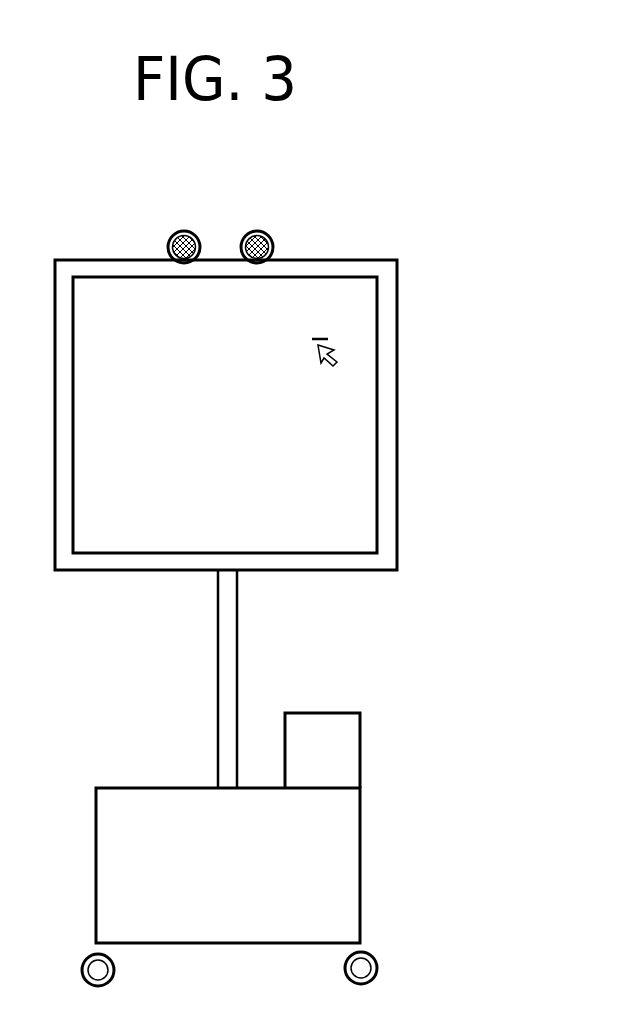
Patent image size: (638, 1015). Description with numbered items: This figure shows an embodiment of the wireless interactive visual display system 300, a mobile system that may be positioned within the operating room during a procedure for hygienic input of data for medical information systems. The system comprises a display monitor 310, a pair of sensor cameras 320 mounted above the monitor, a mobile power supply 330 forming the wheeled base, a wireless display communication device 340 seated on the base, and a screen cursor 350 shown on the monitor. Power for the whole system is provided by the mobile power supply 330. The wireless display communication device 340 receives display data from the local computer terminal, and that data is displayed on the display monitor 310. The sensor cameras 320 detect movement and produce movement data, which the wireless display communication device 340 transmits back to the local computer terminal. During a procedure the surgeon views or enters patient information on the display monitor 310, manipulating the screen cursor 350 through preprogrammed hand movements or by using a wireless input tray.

The wireless interactive visual display system 300 is at (408, 230).
The display monitor 310 is at (397, 366).
The sensor cameras 320 is at (257, 231).
The mobile power supply 330 is at (360, 861).
The wireless display communication device 340 is at (360, 733).
The screen cursor 350 is at (334, 346).